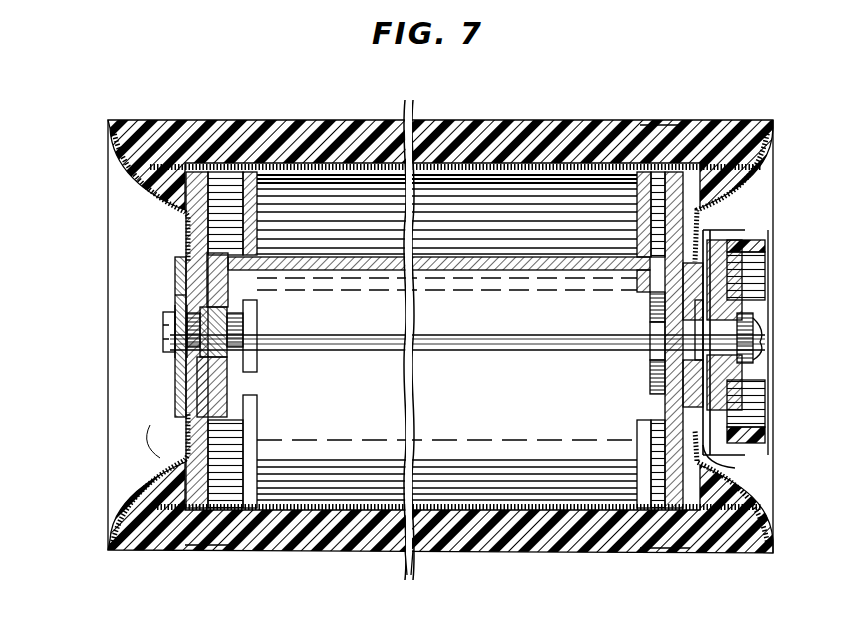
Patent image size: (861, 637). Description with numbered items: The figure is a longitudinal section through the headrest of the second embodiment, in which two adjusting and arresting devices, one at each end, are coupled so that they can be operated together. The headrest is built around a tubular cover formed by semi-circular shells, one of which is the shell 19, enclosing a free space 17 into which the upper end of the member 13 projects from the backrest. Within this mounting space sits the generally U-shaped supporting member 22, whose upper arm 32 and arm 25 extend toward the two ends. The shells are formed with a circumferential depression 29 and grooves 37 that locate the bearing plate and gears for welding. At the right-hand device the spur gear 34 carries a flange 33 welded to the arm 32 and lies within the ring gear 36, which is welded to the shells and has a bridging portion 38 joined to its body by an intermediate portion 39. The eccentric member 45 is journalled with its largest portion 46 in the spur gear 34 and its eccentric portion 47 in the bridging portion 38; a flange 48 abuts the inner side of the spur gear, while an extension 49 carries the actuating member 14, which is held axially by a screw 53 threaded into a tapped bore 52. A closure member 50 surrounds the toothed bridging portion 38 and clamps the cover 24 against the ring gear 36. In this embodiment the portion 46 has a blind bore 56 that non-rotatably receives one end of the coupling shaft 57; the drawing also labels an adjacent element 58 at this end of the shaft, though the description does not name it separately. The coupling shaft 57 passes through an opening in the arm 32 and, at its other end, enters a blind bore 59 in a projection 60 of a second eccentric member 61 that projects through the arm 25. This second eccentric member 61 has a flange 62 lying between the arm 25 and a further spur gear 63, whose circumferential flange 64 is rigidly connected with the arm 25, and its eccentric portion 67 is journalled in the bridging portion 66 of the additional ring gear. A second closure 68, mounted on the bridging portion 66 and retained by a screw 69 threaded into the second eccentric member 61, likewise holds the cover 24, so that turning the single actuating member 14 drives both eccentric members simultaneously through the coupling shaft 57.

The member 13 is at (409, 120).
The actuating member 14 is at (750, 248).
The free space 17 is at (490, 500).
The shell 19 is at (409, 552).
The supporting member 22 is at (405, 262).
The cover 24 is at (122, 166).
The arm 25 is at (240, 272).
The circumferential depression 29 is at (205, 552).
The upper arm 32 is at (665, 400).
The flange 33 is at (652, 428).
The spur gear 34 is at (640, 275).
The ring gear 36 is at (660, 552).
The groove 37 is at (650, 125).
The bridging portion 38 is at (760, 282).
The intermediate portion 39 is at (745, 410).
The eccentric member 45 is at (740, 390).
The portion 46 is at (652, 391).
The eccentric portion 47 is at (725, 302).
The flange 48 is at (648, 294).
The extension 49 is at (754, 320).
The closure member 50 is at (760, 466).
The tapped bore 52 is at (742, 362).
The screw 53 is at (762, 344).
The blind bore 56 is at (650, 312).
The coupling shaft 57 is at (390, 345).
The spacer 58 is at (652, 357).
The blind bore 59 is at (244, 308).
The projection 60 is at (250, 356).
The second eccentric member 61 is at (182, 367).
The flange 62 is at (248, 386).
The spur gear 63 is at (196, 395).
The circumferential flange 64 is at (254, 416).
The bridging portion 66 is at (182, 264).
The eccentric portion 67 is at (182, 295).
The second closure 68 is at (160, 446).
The screw 69 is at (165, 332).